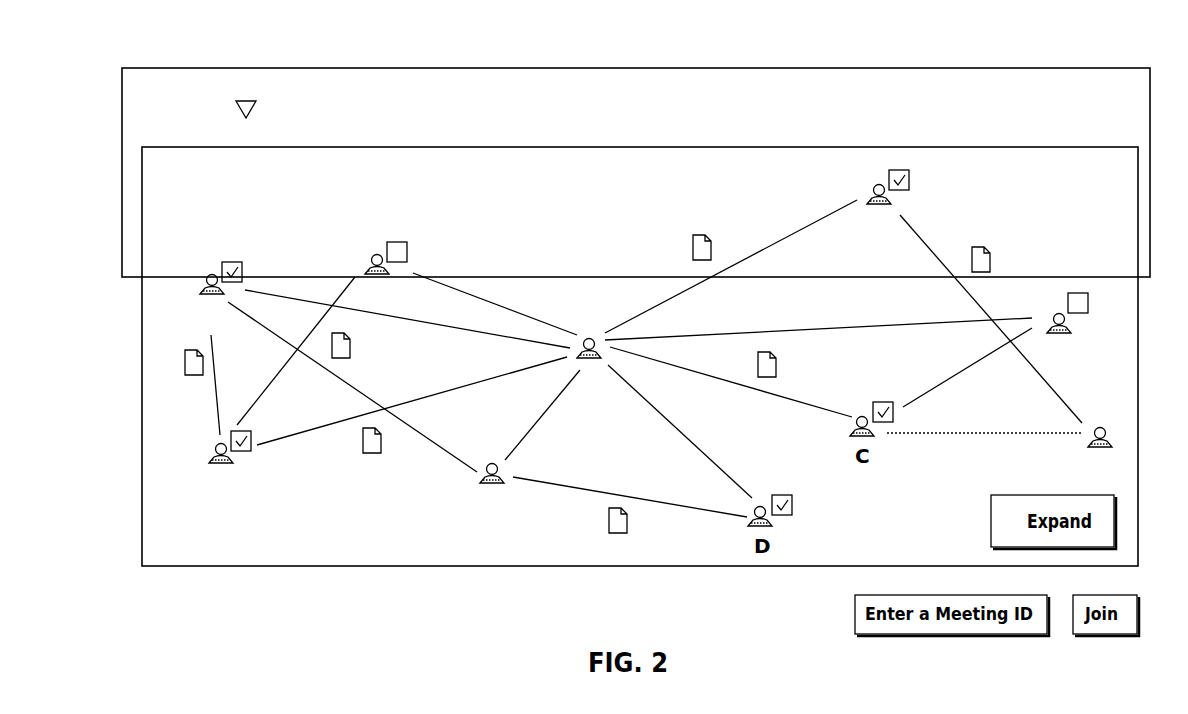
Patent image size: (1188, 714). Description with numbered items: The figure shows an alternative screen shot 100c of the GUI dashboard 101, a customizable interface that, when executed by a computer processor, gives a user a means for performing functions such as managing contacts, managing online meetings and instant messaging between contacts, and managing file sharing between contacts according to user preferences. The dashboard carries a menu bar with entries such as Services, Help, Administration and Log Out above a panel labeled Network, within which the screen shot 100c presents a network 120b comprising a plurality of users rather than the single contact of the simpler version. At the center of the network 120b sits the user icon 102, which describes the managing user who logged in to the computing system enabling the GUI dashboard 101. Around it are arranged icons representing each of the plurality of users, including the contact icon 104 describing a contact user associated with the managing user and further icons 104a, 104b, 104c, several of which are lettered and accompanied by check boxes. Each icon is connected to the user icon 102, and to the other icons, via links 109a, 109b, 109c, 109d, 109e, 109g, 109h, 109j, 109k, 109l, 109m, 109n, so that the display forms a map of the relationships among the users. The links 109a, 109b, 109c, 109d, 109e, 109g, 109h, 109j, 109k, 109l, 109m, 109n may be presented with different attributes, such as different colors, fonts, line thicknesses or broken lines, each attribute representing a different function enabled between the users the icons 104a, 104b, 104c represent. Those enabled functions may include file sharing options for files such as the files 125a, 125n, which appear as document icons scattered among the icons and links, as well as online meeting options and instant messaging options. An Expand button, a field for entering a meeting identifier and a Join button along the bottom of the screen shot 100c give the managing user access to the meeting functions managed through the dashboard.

The screen shot 100c is at (1063, 63).
The GUI dashboard 101 is at (596, 97).
The network 120b is at (320, 240).
The user icon 102 is at (591, 337).
The contact icon 104 is at (372, 255).
The icon 104a is at (1056, 315).
The icon 104b is at (233, 462).
The icon 104c is at (208, 278).
The file 125a is at (702, 237).
The file 125n is at (608, 517).
The link 109a is at (475, 290).
The link 109b is at (427, 325).
The link 109c is at (265, 328).
The link 109d is at (215, 383).
The link 109e is at (273, 380).
The link 109g is at (547, 412).
The link 109h is at (612, 490).
The link 109j is at (720, 462).
The link 109k is at (727, 383).
The link 109l is at (808, 322).
The link 109m is at (927, 387).
The link 109n is at (685, 290).